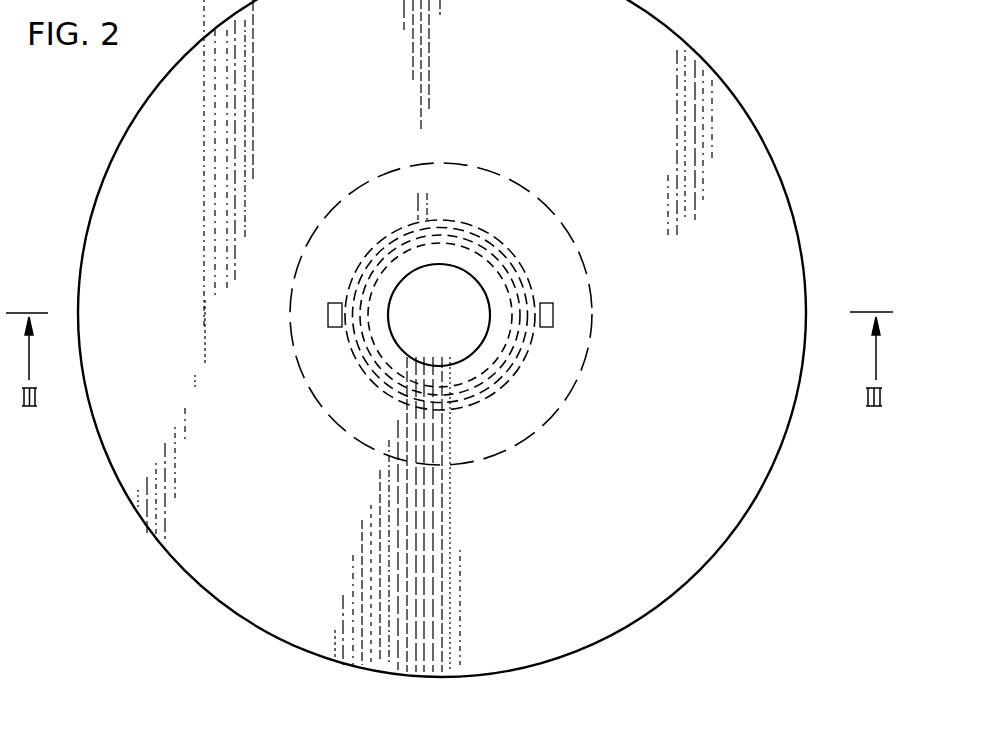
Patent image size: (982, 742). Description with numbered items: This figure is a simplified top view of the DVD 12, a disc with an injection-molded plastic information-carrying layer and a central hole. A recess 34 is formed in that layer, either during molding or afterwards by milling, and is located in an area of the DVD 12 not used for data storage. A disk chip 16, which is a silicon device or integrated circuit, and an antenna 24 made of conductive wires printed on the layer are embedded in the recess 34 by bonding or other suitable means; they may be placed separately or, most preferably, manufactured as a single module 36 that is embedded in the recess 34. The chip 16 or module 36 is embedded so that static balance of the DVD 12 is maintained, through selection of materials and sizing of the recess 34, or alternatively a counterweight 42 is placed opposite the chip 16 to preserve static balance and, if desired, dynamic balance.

The DVD 12 is at (232, 590).
The disk chip 16 is at (540, 307).
The antenna 24 is at (494, 236).
The recess 34 is at (568, 391).
The module 36 is at (459, 204).
The counterweight 42 is at (330, 303).